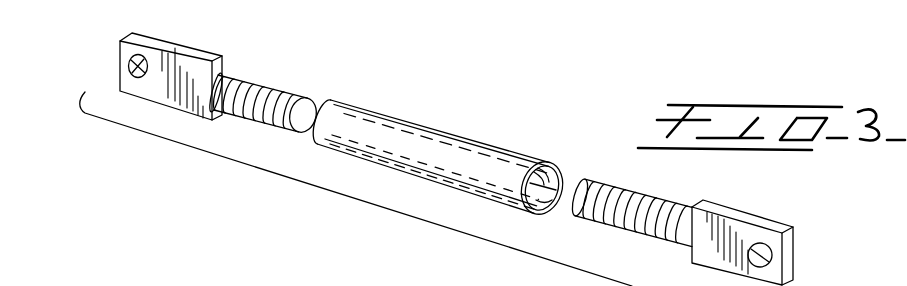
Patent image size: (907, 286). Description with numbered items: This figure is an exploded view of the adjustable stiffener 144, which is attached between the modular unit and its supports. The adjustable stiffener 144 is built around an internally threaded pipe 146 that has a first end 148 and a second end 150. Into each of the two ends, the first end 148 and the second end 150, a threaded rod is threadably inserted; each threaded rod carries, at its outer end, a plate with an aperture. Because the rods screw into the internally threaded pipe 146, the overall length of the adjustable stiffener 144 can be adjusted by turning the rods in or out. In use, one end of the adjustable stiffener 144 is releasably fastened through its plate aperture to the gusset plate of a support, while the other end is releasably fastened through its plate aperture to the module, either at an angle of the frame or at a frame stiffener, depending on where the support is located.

The adjustable stiffener 144 is at (468, 93).
The internally threaded pipe 146 is at (431, 142).
The first end 148 is at (350, 98).
The second end 150 is at (550, 163).